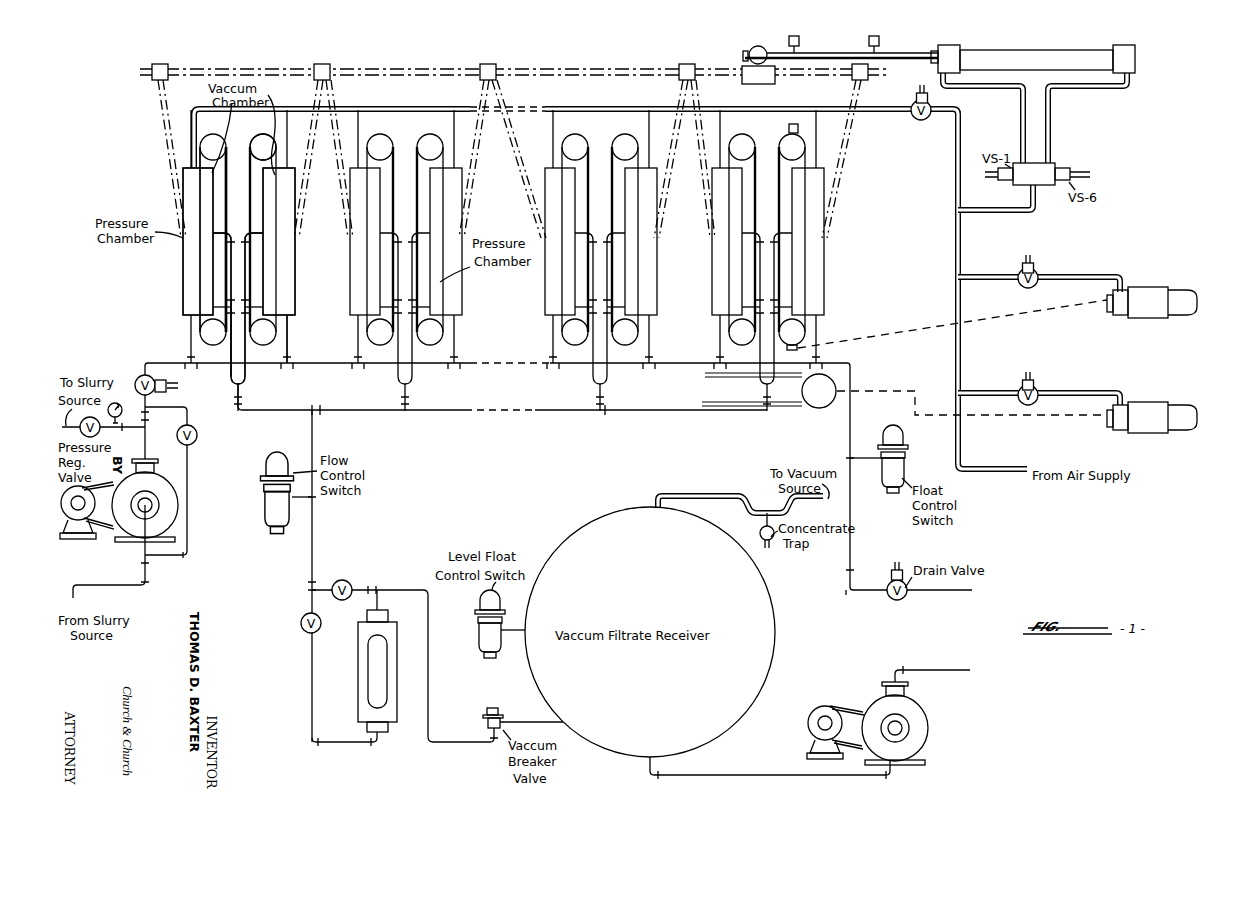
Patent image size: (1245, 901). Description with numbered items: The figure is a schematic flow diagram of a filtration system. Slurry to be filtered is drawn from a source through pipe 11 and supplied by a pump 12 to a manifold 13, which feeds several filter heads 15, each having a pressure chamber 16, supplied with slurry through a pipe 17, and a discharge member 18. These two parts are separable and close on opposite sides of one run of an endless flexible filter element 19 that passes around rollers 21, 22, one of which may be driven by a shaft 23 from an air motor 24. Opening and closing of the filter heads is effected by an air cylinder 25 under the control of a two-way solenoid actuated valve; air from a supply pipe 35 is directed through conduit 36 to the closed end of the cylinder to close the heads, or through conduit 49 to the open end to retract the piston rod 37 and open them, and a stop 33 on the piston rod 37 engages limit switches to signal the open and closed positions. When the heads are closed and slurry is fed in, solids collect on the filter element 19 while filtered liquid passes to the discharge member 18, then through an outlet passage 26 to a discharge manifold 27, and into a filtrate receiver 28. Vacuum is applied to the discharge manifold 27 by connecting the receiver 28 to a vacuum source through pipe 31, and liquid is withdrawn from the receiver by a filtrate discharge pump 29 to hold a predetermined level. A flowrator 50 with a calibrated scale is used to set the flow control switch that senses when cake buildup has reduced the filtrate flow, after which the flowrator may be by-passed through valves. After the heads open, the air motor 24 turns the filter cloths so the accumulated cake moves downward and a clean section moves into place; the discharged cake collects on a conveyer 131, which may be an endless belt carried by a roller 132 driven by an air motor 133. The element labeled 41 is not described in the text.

The pipe 11 is at (140, 590).
The pump 12 is at (162, 483).
The manifold 13 is at (318, 360).
The filter head 15 is at (180, 281).
The pressure chamber 16 is at (297, 268).
The pipe 17 is at (289, 338).
The discharge member 18 is at (265, 197).
The endless flexible filter element 19 is at (254, 166).
The roller 21 is at (265, 146).
The roller 22 is at (262, 343).
The shaft 23 is at (905, 334).
The air motor 24 is at (1150, 318).
The air cylinder 25 is at (1026, 44).
The outlet passage 26 is at (230, 351).
The discharge manifold 27 is at (371, 413).
The filtrate receiver 28 is at (773, 617).
The filtrate discharge pump 29 is at (917, 710).
The pipe 31 is at (697, 495).
The stop 33 is at (803, 53).
The supply pipe 35 is at (959, 258).
The conduit 36 is at (1050, 121).
The piston rod 37 is at (828, 62).
The slurry line 41 is at (312, 538).
The conduit 49 is at (1021, 114).
The flowrator 50 is at (358, 700).
The conveyer 131 is at (820, 408).
The roller 132 is at (783, 407).
The air motor 133 is at (1155, 433).